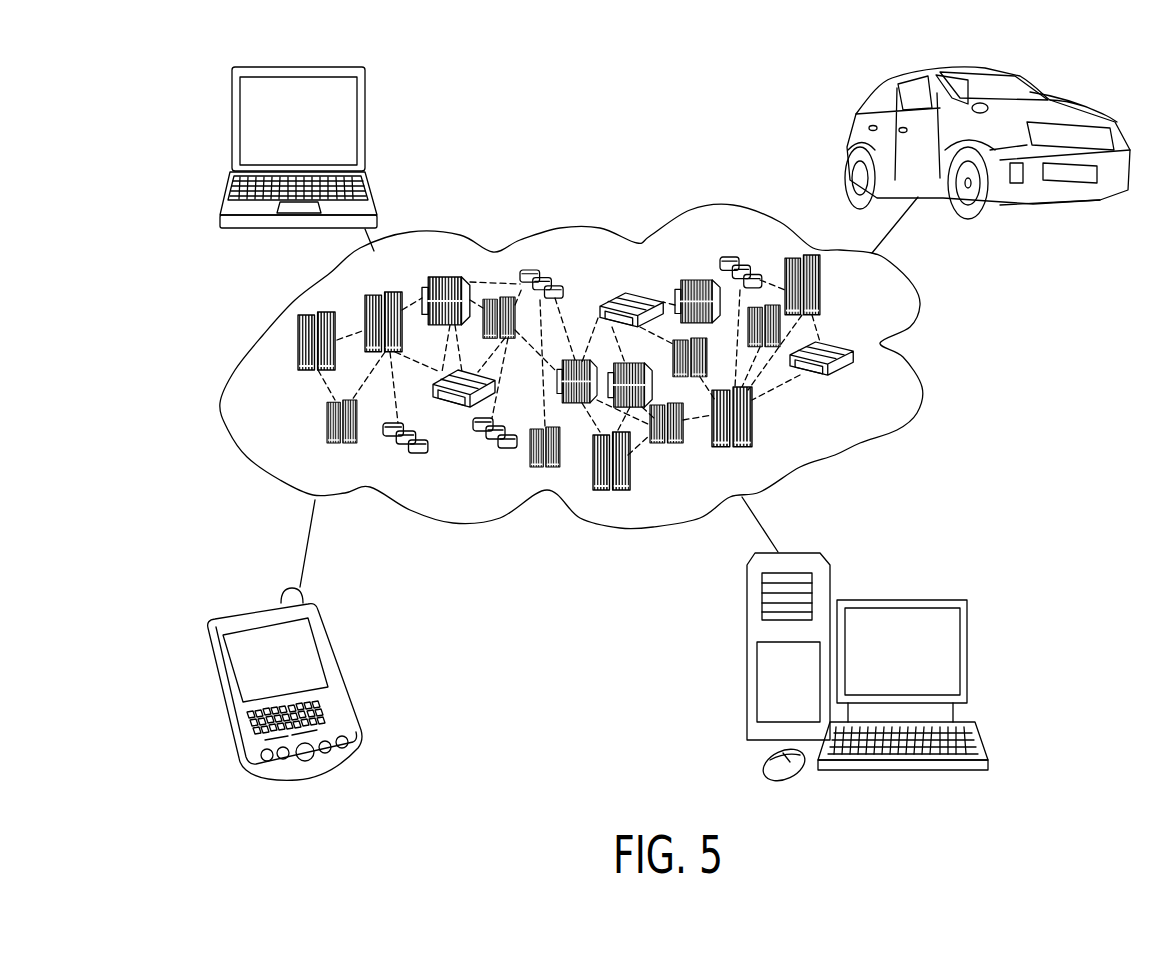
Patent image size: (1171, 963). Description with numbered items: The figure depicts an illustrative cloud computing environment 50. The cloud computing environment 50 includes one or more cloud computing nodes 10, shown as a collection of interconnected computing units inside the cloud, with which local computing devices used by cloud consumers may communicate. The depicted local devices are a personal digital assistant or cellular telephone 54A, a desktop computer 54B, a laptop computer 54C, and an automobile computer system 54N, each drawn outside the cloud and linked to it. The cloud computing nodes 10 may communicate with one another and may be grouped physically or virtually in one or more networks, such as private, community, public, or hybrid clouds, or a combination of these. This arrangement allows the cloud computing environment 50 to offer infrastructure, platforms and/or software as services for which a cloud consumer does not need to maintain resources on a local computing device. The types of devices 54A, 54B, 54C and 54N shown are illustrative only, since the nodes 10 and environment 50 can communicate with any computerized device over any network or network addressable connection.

The cloud computing environment 50 is at (920, 295).
The cloud computing node 10 is at (880, 405).
The personal digital assistant or cellular telephone 54A is at (333, 652).
The desktop computer 54B is at (967, 652).
The laptop computer 54C is at (366, 122).
The automobile computer system 54N is at (1040, 92).